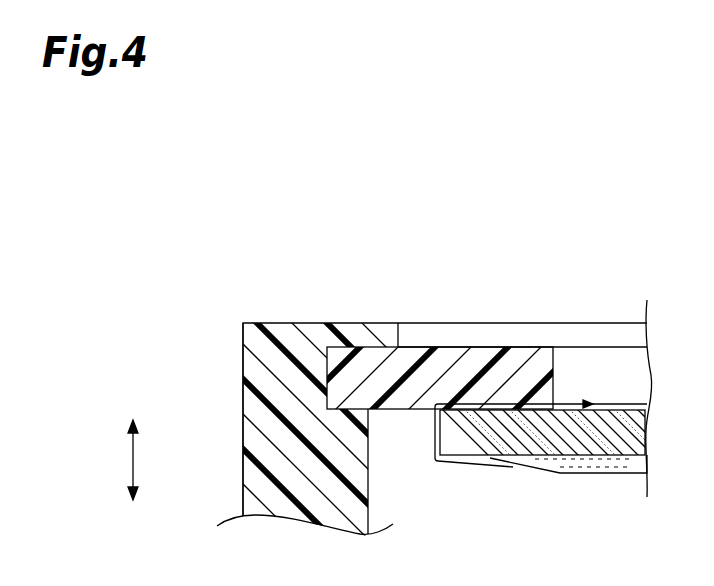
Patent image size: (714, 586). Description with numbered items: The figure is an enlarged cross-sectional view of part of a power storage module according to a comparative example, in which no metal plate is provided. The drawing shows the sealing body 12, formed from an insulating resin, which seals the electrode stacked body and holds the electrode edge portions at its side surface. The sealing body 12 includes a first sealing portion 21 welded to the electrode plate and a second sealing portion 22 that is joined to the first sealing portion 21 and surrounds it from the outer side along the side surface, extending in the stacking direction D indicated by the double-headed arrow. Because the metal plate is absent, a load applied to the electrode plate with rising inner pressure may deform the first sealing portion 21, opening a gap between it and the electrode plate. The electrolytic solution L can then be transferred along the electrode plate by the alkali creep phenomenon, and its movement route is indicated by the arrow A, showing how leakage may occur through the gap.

The sealing body 12 is at (303, 323).
The first sealing portion 21 is at (472, 362).
The second sealing portion 22 is at (256, 441).
The arrow A is at (438, 463).
The electrolytic solution L is at (623, 475).
The stacking direction D is at (131, 461).